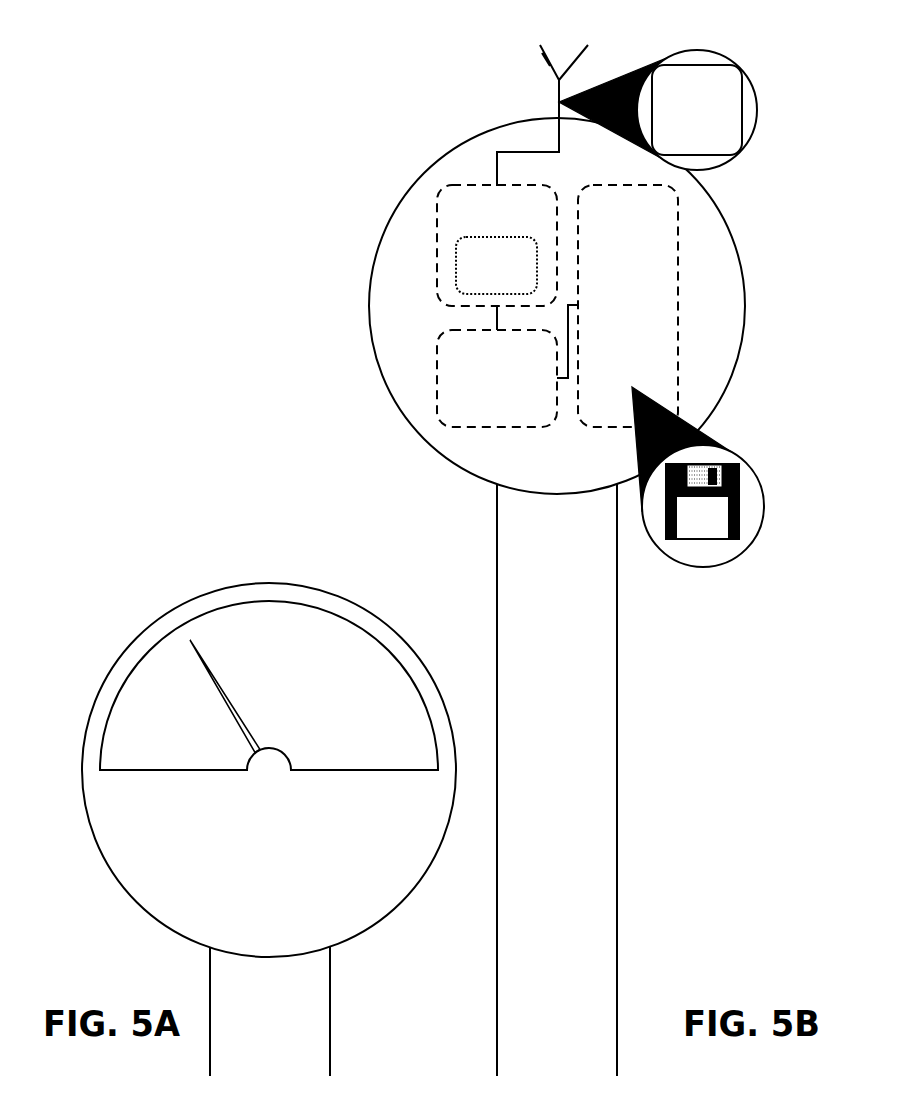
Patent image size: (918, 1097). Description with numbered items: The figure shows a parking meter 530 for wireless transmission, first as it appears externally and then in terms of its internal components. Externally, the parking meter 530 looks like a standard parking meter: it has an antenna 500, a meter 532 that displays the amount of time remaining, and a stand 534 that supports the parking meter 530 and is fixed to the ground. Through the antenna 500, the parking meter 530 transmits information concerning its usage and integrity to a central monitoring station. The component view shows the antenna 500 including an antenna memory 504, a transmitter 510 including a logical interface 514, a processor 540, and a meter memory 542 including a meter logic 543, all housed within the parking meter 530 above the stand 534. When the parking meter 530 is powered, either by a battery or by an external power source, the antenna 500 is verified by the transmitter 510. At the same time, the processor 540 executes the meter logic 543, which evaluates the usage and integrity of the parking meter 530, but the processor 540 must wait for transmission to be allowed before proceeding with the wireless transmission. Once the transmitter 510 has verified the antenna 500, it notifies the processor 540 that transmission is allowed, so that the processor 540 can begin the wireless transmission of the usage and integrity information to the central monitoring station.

In FIG. 5B, the antenna 500 is at (547, 63).
In FIG. 5B, the antenna memory 504 is at (722, 63).
In FIG. 5B, the transmitter 510 is at (440, 190).
In FIG. 5B, the logical interface 514 is at (473, 293).
In FIG. 5A, the parking meter 530 is at (170, 610).
In FIG. 5B, the parking meter 530 is at (377, 257).
In FIG. 5A, the meter 532 is at (238, 708).
In FIG. 5A, the stand 534 is at (330, 965).
In FIG. 5B, the stand 534 is at (617, 633).
In FIG. 5B, the processor 540 is at (443, 425).
In FIG. 5B, the meter memory 542 is at (617, 427).
In FIG. 5B, the meter logic 543 is at (732, 542).